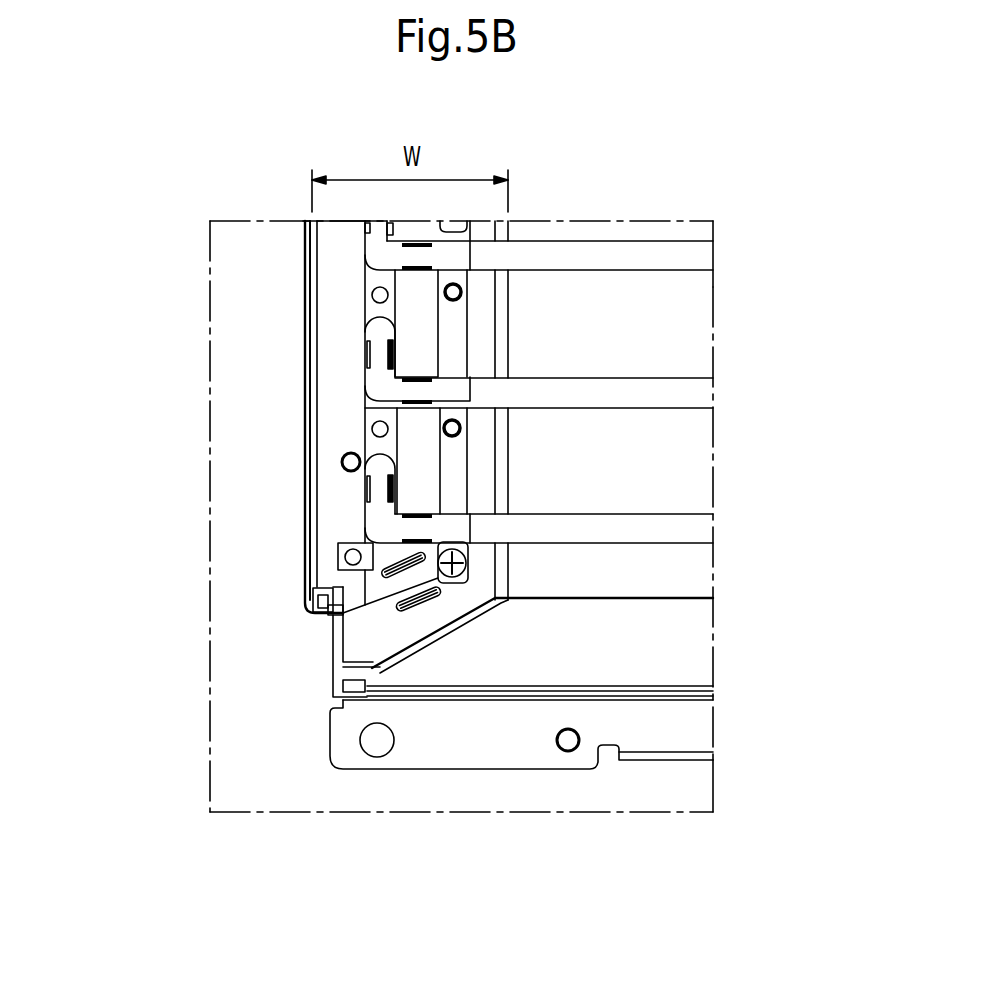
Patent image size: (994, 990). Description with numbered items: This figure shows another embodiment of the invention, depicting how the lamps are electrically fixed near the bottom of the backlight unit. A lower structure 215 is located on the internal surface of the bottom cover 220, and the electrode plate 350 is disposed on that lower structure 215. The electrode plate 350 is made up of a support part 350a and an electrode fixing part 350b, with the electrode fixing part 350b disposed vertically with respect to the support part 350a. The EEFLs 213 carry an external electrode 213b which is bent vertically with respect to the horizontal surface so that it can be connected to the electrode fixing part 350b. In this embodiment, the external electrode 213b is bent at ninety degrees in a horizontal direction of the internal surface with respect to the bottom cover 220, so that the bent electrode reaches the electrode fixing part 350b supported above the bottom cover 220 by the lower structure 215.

The EEFLs 213 is at (650, 522).
The external electrode 213b is at (373, 515).
The lower structure 215 is at (325, 562).
The bottom cover 220 is at (700, 640).
The electrode plate 350 is at (250, 382).
The support part 350a is at (365, 307).
The electrode fixing part 350b is at (362, 355).